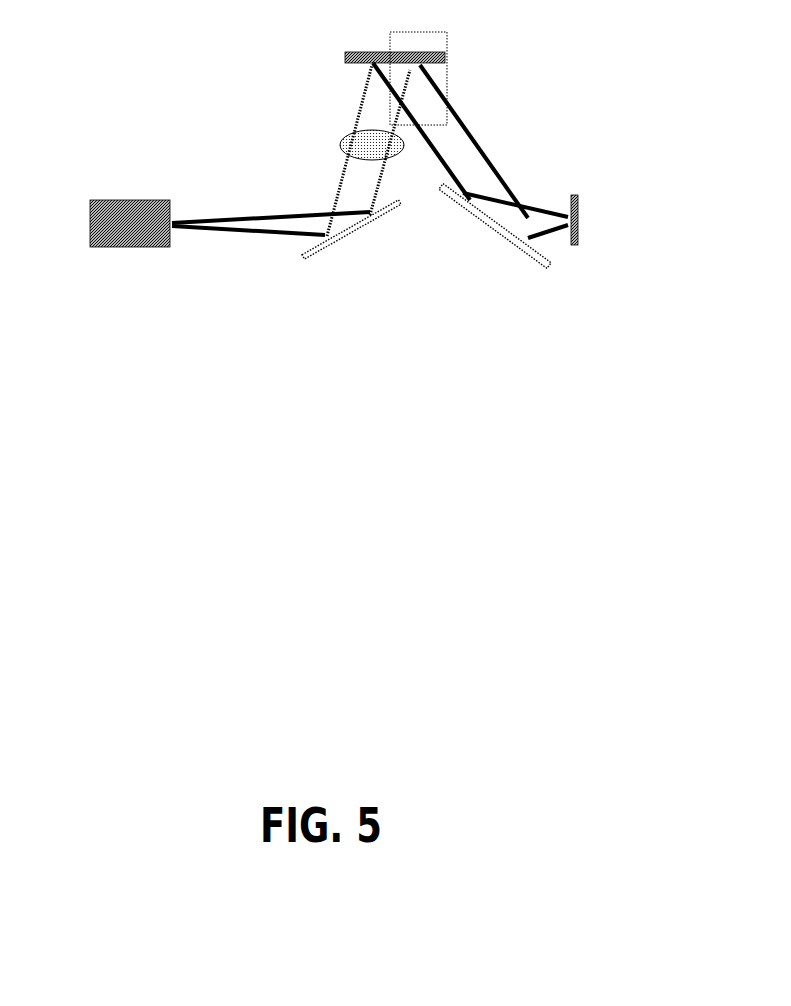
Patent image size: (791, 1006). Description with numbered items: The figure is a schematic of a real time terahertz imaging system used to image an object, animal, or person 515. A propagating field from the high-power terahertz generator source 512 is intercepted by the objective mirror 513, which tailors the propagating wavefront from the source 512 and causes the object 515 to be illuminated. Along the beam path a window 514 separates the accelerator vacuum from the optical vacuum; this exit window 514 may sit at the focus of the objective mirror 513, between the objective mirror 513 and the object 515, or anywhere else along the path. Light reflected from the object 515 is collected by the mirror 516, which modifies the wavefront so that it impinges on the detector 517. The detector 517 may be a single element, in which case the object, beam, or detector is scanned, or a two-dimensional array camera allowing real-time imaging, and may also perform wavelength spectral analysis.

The source 512 is at (118, 199).
The objective mirror 513 is at (352, 232).
The window 514 is at (343, 138).
The object 515 is at (440, 55).
The mirror 516 is at (490, 230).
The detector 517 is at (578, 220).